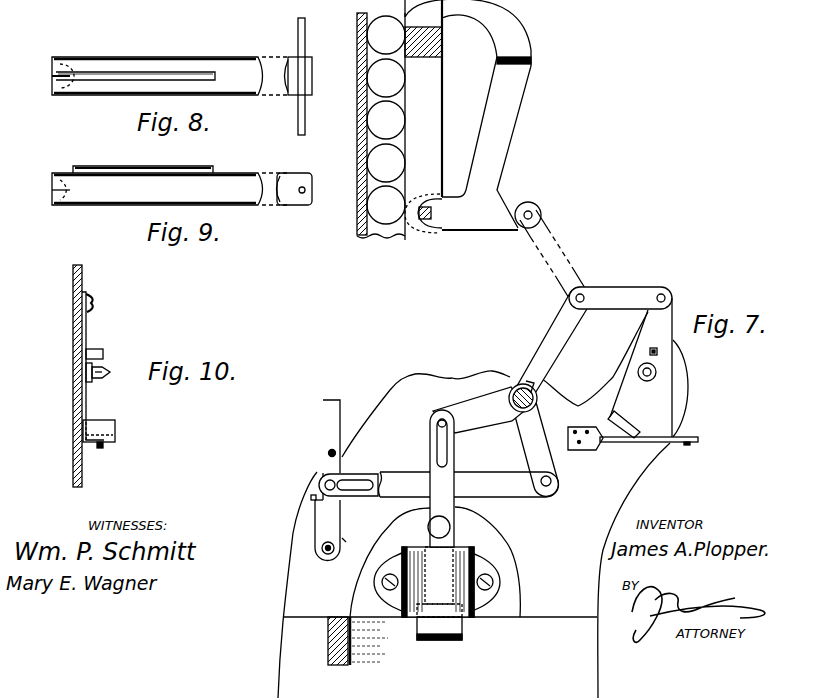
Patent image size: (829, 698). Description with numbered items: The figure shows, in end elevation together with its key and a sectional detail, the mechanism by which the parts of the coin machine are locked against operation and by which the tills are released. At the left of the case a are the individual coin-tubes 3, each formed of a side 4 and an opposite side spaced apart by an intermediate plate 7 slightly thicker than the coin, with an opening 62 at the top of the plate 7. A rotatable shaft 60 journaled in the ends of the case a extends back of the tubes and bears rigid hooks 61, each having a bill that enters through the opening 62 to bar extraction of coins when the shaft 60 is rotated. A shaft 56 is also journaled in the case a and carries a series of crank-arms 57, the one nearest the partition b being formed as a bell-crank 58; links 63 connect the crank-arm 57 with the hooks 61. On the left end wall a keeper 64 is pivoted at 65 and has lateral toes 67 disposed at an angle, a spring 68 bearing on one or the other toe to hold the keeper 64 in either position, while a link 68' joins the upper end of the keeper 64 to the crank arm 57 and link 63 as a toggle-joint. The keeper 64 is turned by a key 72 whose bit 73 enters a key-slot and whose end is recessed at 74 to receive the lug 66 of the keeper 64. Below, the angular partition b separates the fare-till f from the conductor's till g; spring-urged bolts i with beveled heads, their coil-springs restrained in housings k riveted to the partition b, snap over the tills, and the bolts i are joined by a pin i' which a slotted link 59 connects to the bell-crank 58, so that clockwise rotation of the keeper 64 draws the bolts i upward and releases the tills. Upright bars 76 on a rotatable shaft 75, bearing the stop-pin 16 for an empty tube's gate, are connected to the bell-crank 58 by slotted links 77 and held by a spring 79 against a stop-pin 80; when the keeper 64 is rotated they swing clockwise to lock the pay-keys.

In FIG. 7, the coin-tubes 3 is at (381, 137).
In FIG. 7, the side 4 is at (370, 100).
In FIG. 7, the intermediate plate 7 is at (437, 75).
In FIG. 7, the stop-pin 16 is at (328, 452).
In FIG. 7, the shaft 56 is at (513, 387).
In FIG. 7, the crank-arms 57 is at (571, 467).
In FIG. 7, the bell-crank 58 is at (460, 410).
In FIG. 7, the slotted link 59 is at (432, 455).
In FIG. 7, the rotatable shaft 60 is at (426, 220).
In FIG. 7, the hooks 61 is at (510, 97).
In FIG. 7, the opening 62 is at (430, 23).
In FIG. 7, the links 63 is at (540, 222).
In FIG. 10, the keeper 64 is at (87, 413).
In FIG. 7, the keeper 64 is at (607, 416).
In FIG. 10, the pivot 65 is at (110, 373).
In FIG. 7, the pivot 65 is at (656, 373).
In FIG. 10, the lug 66 is at (103, 354).
In FIG. 7, the lug 66 is at (657, 352).
In FIG. 10, the lateral toes 67 is at (115, 428).
In FIG. 7, the lateral toes 67 is at (630, 427).
In FIG. 10, the spring 68 is at (125, 452).
In FIG. 7, the spring 68 is at (704, 457).
In FIG. 10, the link 68' is at (110, 299).
In FIG. 7, the link 68' is at (620, 344).
In FIG. 8, the key 72 is at (108, 62).
In FIG. 9, the key 72 is at (246, 187).
In FIG. 8, the bit 73 is at (135, 75).
In FIG. 9, the bit 73 is at (118, 168).
In FIG. 8, the recess 74 is at (70, 78).
In FIG. 9, the recess 74 is at (70, 190).
In FIG. 7, the rotatable shaft 75 is at (322, 548).
In FIG. 7, the upright bars 76 is at (325, 410).
In FIG. 7, the slotted links 77 is at (465, 482).
In FIG. 7, the spring 79 is at (342, 538).
In FIG. 7, the stop-pin 80 is at (312, 497).
In FIG. 10, the case a is at (73, 283).
In FIG. 7, the case a is at (688, 0).
In FIG. 7, the angular partition b is at (330, 643).
In FIG. 7, the fare-till f is at (345, 641).
In FIG. 7, the conductor's till g is at (438, 604).
In FIG. 7, the bolts i is at (456, 632).
In FIG. 7, the pin i' is at (457, 521).
In FIG. 7, the housings k is at (440, 568).